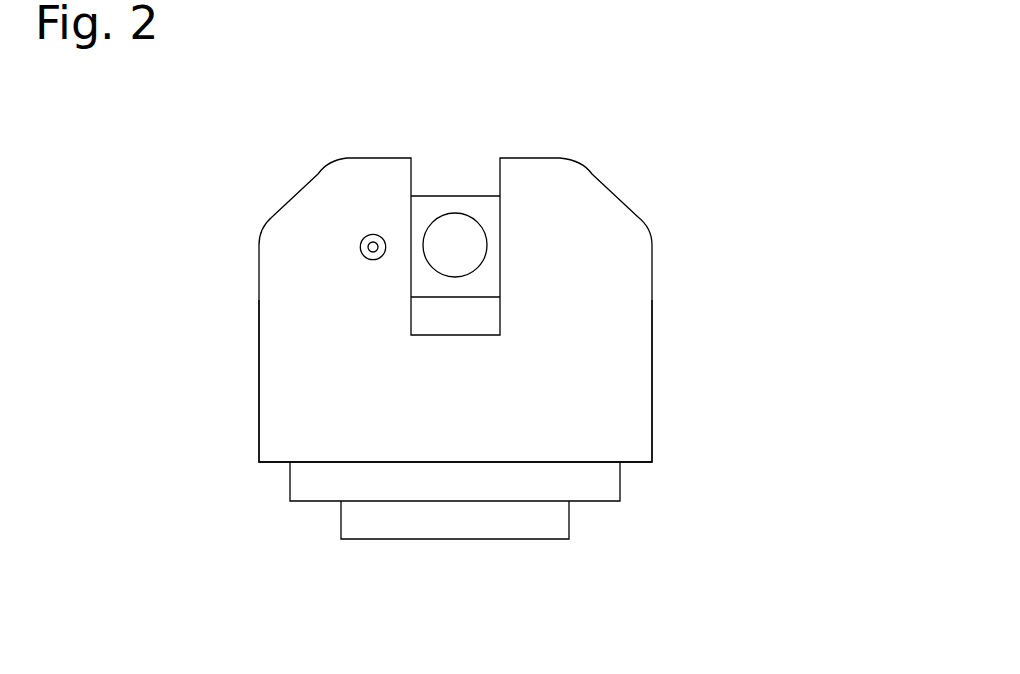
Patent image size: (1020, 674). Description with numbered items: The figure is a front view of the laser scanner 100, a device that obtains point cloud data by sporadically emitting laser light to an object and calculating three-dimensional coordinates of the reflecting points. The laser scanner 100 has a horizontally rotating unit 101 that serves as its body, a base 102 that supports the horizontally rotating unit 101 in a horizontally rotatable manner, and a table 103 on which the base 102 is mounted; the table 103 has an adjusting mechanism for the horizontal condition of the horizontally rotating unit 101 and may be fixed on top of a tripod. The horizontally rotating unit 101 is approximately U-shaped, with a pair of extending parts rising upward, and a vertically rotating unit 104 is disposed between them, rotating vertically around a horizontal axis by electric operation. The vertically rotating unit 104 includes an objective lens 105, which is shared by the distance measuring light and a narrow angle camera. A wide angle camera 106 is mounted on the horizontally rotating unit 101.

The laser scanner 100 is at (655, 298).
The horizontally rotating unit 101 is at (627, 418).
The base 102 is at (600, 487).
The table 103 is at (557, 523).
The vertically rotating unit 104 is at (474, 203).
The objective lens 105 is at (457, 235).
The wide angle camera 106 is at (360, 247).